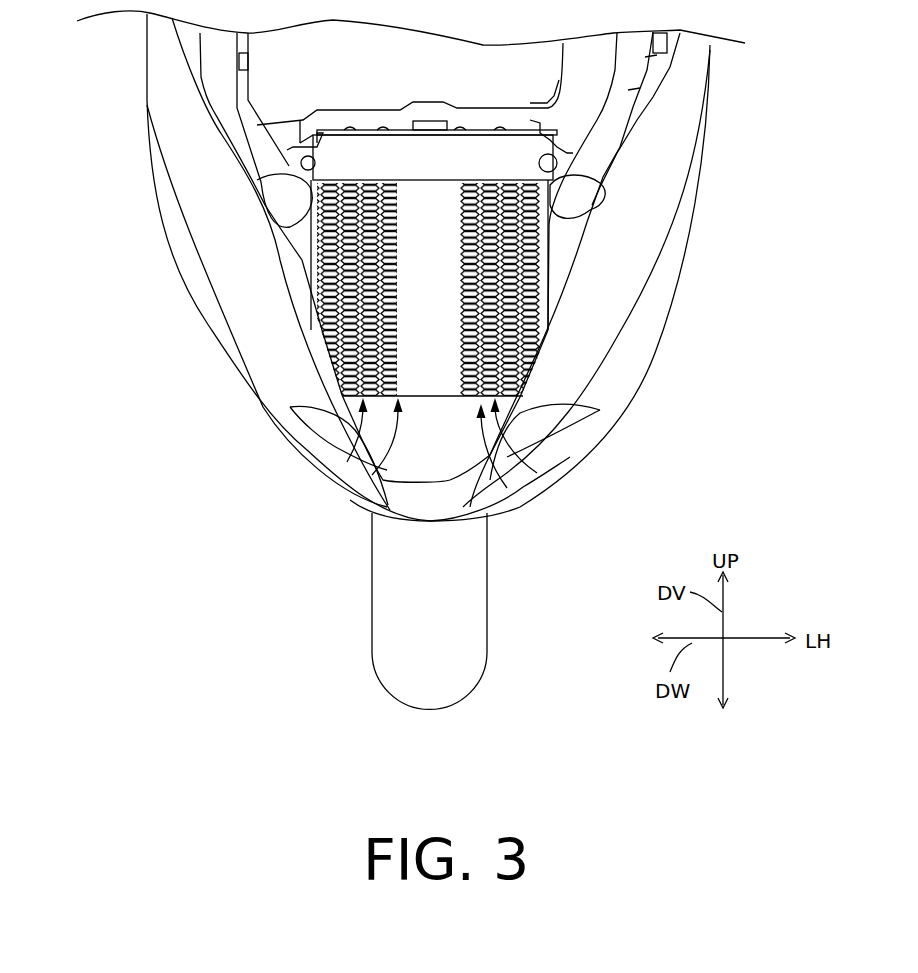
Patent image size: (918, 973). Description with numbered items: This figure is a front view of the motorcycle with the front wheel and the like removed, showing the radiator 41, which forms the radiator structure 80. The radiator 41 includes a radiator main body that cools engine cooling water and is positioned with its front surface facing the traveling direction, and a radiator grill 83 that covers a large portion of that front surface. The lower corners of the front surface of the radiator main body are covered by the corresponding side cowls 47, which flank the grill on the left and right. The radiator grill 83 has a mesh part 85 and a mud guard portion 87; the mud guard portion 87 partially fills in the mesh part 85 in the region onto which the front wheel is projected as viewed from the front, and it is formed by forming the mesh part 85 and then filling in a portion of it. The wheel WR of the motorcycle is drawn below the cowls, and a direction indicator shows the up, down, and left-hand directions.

The side cowl 47 is at (267, 357).
The mesh part 85 is at (357, 452).
The radiator grill 83 is at (380, 457).
The mud guard portion 87 is at (425, 378).
The radiator 41 is at (512, 440).
The radiator structure 80 is at (415, 307).
The rear wheel WR is at (477, 612).